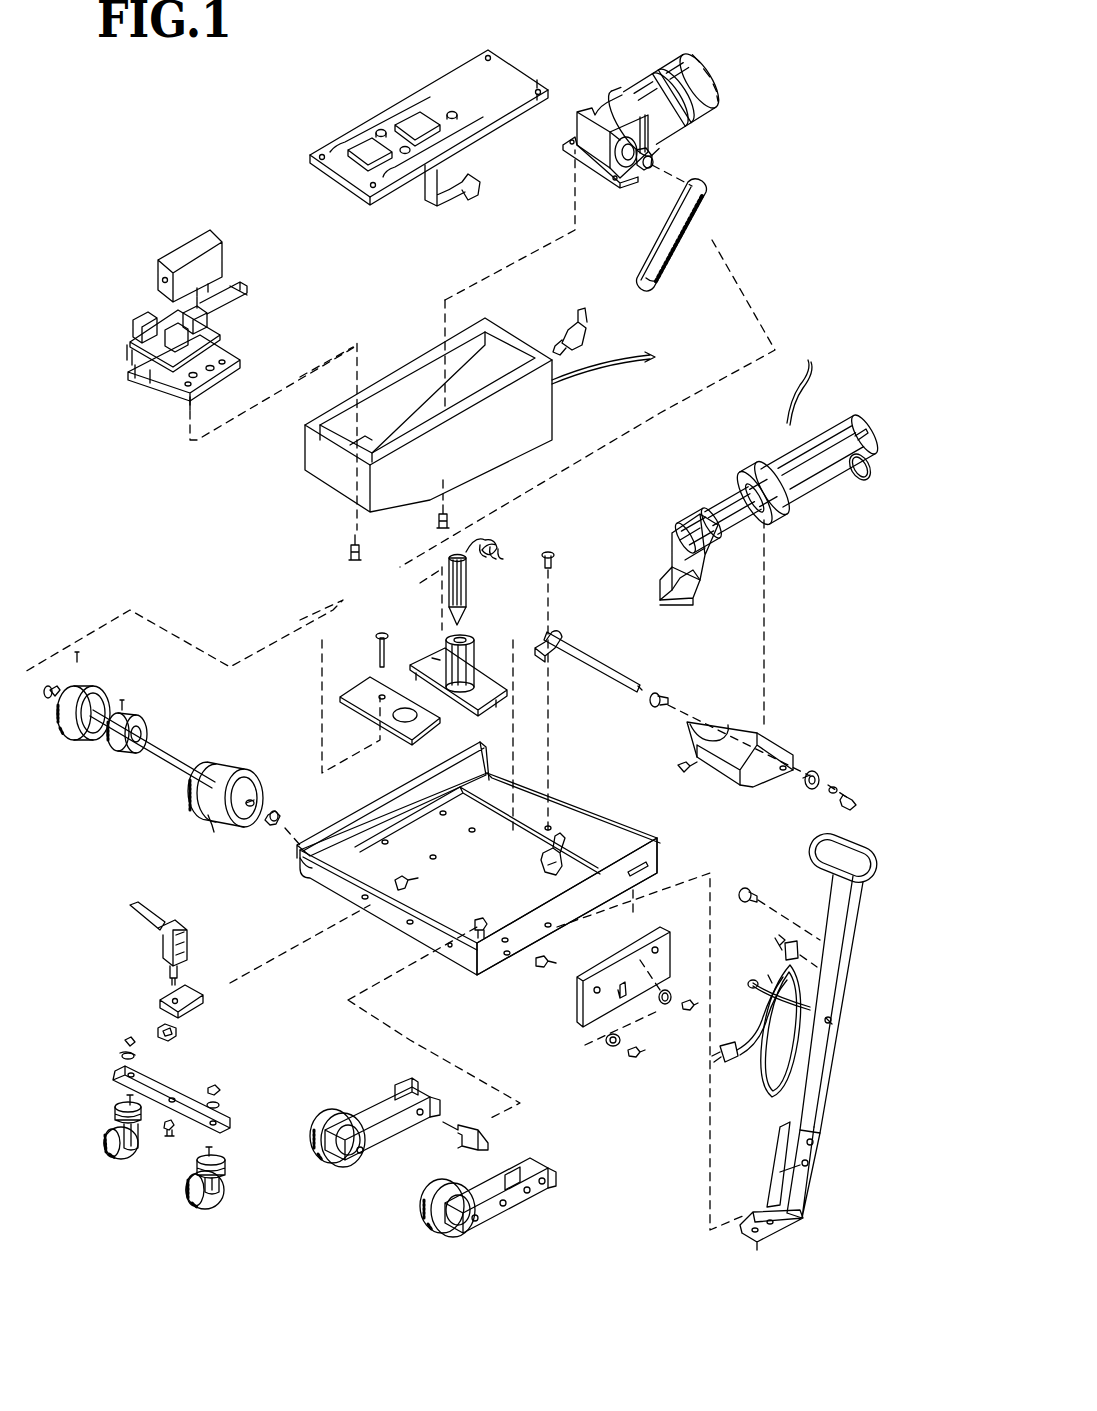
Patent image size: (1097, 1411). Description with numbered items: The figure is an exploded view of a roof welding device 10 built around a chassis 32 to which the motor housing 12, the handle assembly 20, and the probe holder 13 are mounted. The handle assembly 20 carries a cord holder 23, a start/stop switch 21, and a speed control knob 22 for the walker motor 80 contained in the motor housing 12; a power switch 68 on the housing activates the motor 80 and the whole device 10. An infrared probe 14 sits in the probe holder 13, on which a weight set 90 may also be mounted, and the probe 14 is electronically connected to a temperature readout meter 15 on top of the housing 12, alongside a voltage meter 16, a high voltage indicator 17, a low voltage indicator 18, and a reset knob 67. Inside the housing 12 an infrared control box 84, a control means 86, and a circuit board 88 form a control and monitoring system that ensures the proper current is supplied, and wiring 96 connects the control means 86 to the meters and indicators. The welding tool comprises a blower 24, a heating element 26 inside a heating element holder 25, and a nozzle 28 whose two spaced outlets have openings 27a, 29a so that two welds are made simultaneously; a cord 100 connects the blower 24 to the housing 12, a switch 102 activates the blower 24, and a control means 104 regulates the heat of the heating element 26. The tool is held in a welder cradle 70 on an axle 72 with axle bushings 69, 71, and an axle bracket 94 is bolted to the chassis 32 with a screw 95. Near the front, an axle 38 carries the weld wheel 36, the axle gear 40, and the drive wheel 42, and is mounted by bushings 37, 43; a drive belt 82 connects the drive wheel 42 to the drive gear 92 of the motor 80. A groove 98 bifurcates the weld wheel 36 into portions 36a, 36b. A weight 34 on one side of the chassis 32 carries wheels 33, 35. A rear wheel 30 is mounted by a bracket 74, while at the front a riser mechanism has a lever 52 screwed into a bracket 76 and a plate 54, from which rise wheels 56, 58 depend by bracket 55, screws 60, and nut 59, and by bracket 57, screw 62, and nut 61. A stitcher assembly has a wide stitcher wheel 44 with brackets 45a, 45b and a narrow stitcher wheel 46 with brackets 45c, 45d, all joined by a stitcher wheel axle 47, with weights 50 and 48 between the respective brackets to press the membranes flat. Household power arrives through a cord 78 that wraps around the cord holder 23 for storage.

The welding device 10 is at (263, 185).
The motor housing 12 is at (525, 423).
The probe holder 13 is at (476, 655).
The infrared probe 14 is at (467, 583).
The temperature readout meter 15 is at (368, 150).
The voltage meter 16 is at (418, 118).
The high voltage indicator 17 is at (381, 128).
The low voltage indicator 18 is at (405, 155).
The handle assembly 20 is at (852, 917).
The start/stop switch 21 is at (782, 952).
The speed control knob 22 is at (741, 890).
The cord holder 23 is at (795, 1015).
The blower 24 is at (845, 440).
The heating element holder 25 is at (700, 515).
The heating element 26 is at (750, 515).
The opening 27a is at (660, 585).
The nozzle 28 is at (702, 568).
The opening 29a is at (680, 605).
The wheel 30 is at (560, 875).
The chassis 32 is at (662, 858).
The wheel 33 is at (679, 987).
The weight 34 is at (663, 930).
The wheel 35 is at (605, 1045).
The weld wheel 36 is at (164, 728).
The weld wheel portion 36a is at (262, 790).
The weld wheel portion 36b is at (205, 765).
The bushing 37 is at (272, 832).
The axle 38 is at (160, 745).
The axle gear 40 is at (135, 715).
The drive wheel 42 is at (100, 688).
The bushing 43 is at (50, 685).
The wide stitcher wheel 44 is at (335, 1170).
The bracket 45a is at (437, 1112).
The bracket 45b is at (420, 1082).
The bracket 45c is at (558, 1182).
The bracket 45d is at (540, 1168).
The narrow stitcher wheel 46 is at (448, 1238).
The stitcher wheel axle 47 is at (490, 1140).
The weight 48 is at (508, 1203).
The weight 50 is at (396, 1132).
The lever 52 is at (160, 958).
The plate 54 is at (175, 1095).
The bracket 55 is at (234, 1179).
The rise wheel 56 is at (190, 1208).
The bracket 57 is at (140, 1125).
The rise wheel 58 is at (108, 1149).
The nut 59 is at (222, 1088).
The screws 60 is at (222, 1152).
The nut 61 is at (130, 1036).
The screw 62 is at (125, 1105).
The reset knob 67 is at (455, 112).
The power switch 68 is at (588, 334).
The axle bushing 69 is at (816, 775).
The welder cradle 70 is at (772, 735).
The axle bushing 71 is at (662, 692).
The axle 72 is at (600, 655).
The bracket 74 is at (560, 850).
The bracket 76 is at (205, 995).
The cord 78 is at (773, 1093).
The walker motor 80 is at (680, 130).
The drive belt 82 is at (700, 236).
The infrared control box 84 is at (218, 252).
The control means 86 is at (222, 338).
The circuit board 88 is at (232, 360).
The weight set 90 is at (365, 680).
The drive gear 92 is at (647, 167).
The axle bracket 94 is at (548, 632).
The screw 95 is at (551, 552).
The wiring 96 is at (476, 192).
The groove 98 is at (212, 826).
The cord 100 is at (800, 370).
The switch 102 is at (858, 436).
The control means 104 is at (866, 460).